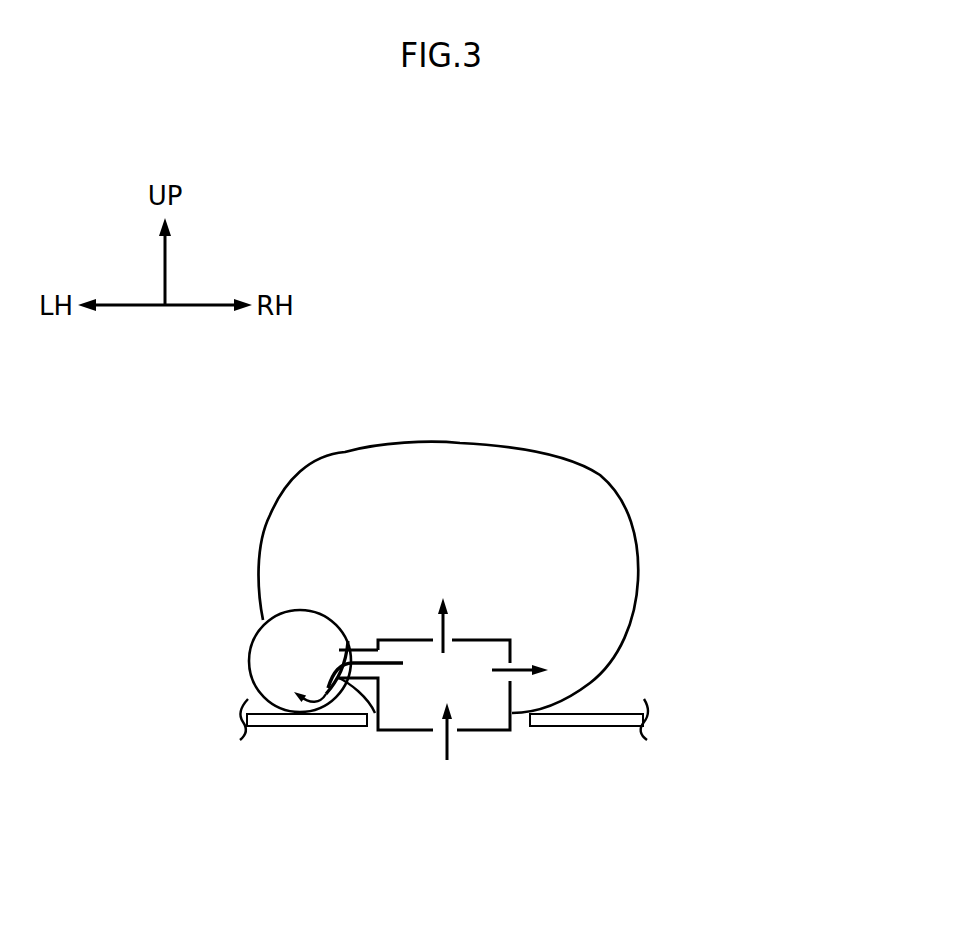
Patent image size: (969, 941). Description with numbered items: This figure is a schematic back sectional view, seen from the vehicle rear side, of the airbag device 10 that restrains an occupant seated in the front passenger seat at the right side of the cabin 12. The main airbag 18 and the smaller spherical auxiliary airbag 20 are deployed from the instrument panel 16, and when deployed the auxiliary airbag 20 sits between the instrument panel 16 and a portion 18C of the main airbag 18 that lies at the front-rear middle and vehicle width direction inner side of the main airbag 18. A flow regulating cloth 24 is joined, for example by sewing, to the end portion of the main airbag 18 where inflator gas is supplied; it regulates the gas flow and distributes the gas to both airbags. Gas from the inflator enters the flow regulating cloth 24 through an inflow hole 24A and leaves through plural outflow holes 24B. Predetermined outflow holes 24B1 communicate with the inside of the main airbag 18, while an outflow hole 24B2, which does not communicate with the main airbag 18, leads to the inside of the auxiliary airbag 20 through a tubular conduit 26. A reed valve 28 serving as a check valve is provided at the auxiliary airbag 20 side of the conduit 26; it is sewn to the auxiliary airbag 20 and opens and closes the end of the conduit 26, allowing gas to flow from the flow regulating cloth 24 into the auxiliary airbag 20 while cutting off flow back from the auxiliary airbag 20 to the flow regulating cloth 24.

The airbag device 10 is at (532, 388).
The cabin 12 is at (435, 411).
The instrument panel 16 is at (617, 711).
The main airbag 18 is at (552, 449).
The portion of the main airbag 18C is at (313, 613).
The auxiliary airbag 20 is at (250, 653).
The flow regulating cloth 24 is at (495, 732).
The inflow hole 24A is at (437, 733).
The outflow holes 24B is at (646, 584).
The outflow holes 24B1 is at (455, 640).
The outflow hole 24B2 is at (380, 676).
The conduit 26 is at (363, 677).
The reed valve 28 is at (326, 660).